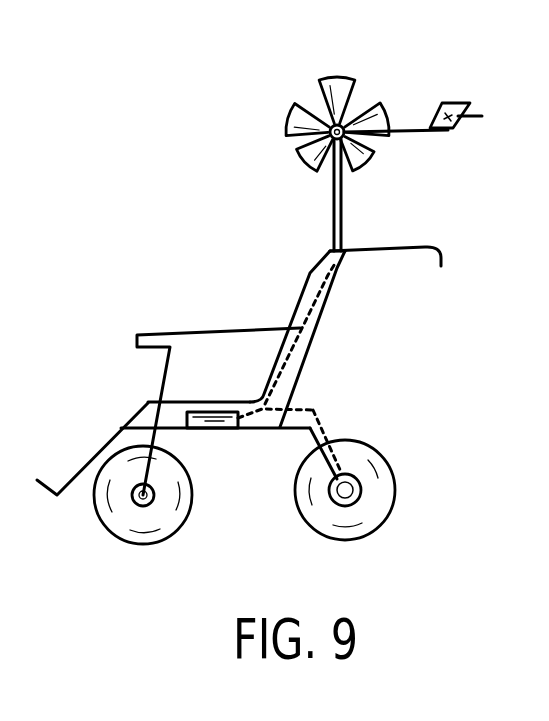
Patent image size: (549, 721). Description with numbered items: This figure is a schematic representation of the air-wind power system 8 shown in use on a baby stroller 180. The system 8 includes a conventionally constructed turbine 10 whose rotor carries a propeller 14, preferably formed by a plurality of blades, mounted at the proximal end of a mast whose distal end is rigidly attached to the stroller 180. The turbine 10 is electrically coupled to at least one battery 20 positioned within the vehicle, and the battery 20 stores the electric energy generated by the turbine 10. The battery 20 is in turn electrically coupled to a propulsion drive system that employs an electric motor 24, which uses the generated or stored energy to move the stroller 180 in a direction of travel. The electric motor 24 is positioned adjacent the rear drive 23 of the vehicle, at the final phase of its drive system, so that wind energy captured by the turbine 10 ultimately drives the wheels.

The air-wind power system 8 is at (78, 269).
The turbine 10 is at (354, 128).
The propeller 14 is at (287, 119).
The battery 20 is at (212, 420).
The rear drive 23 is at (362, 492).
The electric motor 24 is at (349, 476).
The baby stroller 180 is at (297, 302).